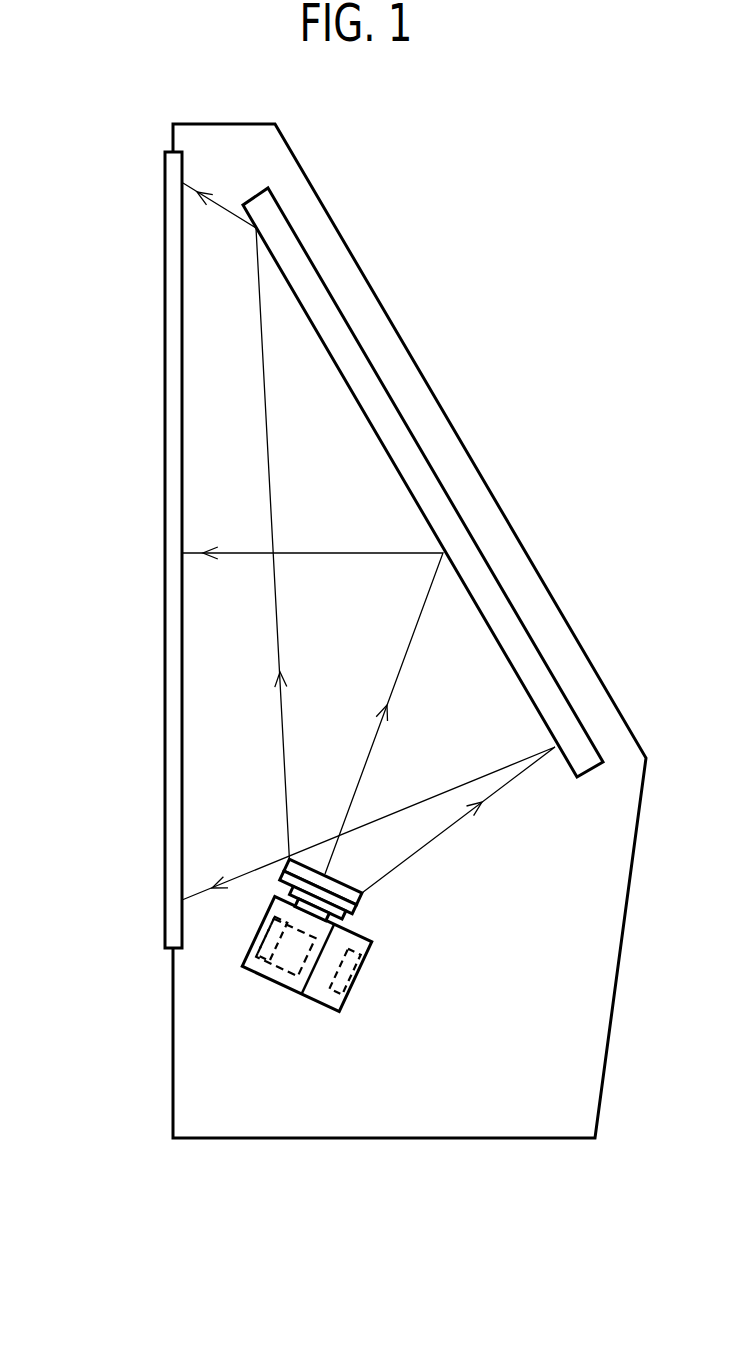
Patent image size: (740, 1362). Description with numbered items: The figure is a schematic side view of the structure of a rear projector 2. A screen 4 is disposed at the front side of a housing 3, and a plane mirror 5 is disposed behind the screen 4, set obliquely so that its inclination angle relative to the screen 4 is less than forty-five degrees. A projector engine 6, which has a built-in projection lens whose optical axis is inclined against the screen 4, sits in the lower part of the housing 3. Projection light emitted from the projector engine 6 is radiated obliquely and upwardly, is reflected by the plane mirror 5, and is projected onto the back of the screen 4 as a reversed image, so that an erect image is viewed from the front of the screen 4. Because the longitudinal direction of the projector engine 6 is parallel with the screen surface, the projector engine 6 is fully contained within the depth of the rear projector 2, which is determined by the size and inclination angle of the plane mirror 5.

The rear projector 2 is at (294, 1141).
The housing 3 is at (438, 1140).
The screen 4 is at (173, 800).
The plane mirror 5 is at (422, 477).
The projector engine 6 is at (310, 998).